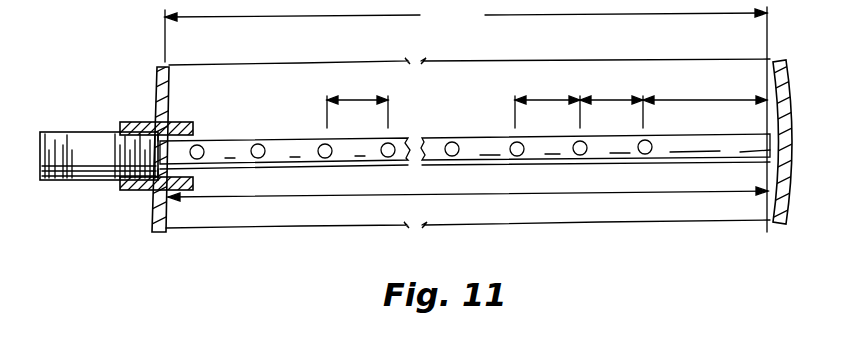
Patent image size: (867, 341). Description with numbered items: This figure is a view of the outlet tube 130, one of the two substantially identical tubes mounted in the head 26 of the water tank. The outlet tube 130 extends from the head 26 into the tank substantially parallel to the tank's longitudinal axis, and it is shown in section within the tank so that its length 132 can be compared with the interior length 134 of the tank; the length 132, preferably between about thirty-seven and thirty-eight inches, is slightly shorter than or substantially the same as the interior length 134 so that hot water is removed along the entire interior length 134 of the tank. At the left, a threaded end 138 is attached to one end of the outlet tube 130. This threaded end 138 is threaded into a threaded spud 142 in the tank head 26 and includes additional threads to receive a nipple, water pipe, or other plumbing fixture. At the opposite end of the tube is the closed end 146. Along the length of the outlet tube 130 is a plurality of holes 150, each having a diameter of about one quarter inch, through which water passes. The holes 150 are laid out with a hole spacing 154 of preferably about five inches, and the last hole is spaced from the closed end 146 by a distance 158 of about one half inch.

The head 26 is at (157, 73).
The outlet tube 130 is at (255, 124).
The length 132 is at (468, 191).
The interior length 134 is at (466, 119).
The threaded end 138 is at (91, 165).
The threaded spud 142 is at (133, 192).
The closed end 146 is at (767, 149).
The holes 150 is at (320, 145).
The hole spacing 154 is at (351, 100).
The distance 158 is at (719, 100).